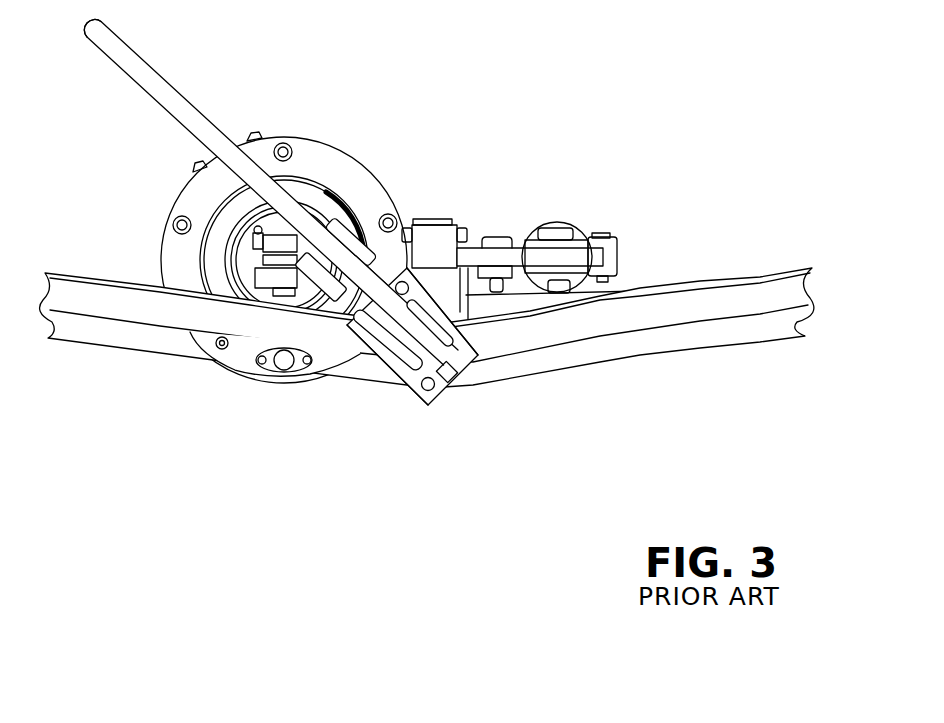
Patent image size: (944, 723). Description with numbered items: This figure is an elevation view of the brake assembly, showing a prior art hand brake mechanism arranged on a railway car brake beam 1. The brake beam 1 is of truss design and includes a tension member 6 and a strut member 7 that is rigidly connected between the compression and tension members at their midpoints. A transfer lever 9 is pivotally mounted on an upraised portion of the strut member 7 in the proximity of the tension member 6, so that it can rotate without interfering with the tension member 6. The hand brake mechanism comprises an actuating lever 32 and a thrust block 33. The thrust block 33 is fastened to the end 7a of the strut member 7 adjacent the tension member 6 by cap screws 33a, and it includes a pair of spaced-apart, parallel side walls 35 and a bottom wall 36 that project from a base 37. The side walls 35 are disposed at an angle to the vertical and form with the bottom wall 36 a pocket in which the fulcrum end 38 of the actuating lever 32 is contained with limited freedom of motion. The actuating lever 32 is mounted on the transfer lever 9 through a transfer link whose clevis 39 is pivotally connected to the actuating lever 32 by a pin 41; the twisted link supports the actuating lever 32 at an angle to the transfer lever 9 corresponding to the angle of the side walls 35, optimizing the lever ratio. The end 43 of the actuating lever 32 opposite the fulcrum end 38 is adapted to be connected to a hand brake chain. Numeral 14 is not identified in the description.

The brake beam 1 is at (665, 372).
The tension member 6 is at (255, 326).
The strut member 7 is at (446, 241).
The end of strut member 7a is at (468, 297).
The transfer lever 9 is at (514, 254).
The flange 14 is at (291, 130).
The actuating lever 32 is at (170, 81).
The thrust block 33 is at (397, 330).
The cap screws 33a is at (403, 283).
The side walls 35 is at (376, 350).
The bottom wall 36 is at (458, 378).
The base 37 is at (438, 315).
The fulcrum end 38 is at (388, 337).
The clevis 39 is at (332, 227).
The pin 41 is at (353, 221).
The end of actuating lever 43 is at (107, 47).